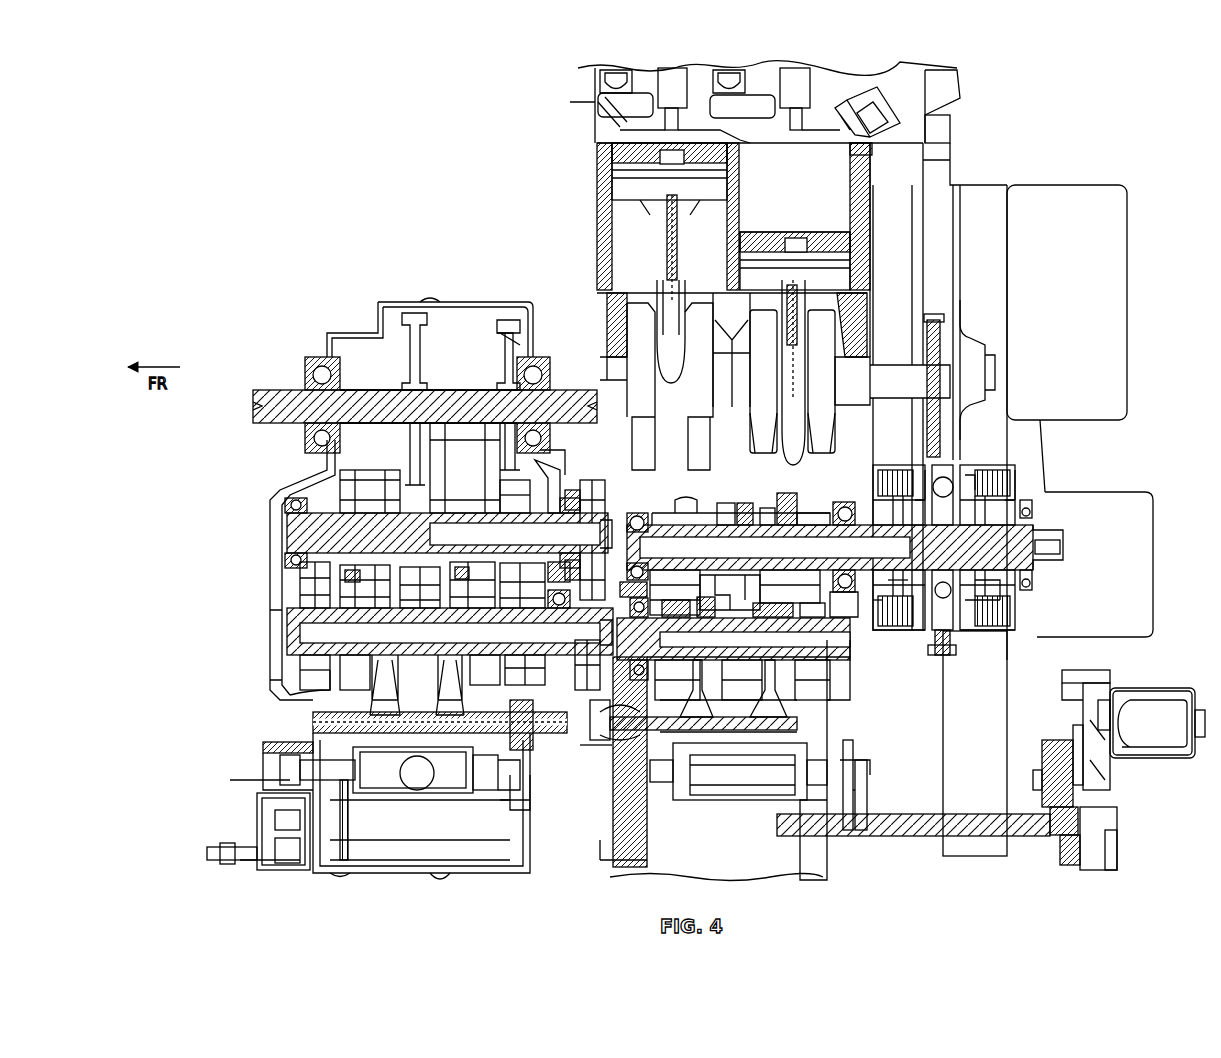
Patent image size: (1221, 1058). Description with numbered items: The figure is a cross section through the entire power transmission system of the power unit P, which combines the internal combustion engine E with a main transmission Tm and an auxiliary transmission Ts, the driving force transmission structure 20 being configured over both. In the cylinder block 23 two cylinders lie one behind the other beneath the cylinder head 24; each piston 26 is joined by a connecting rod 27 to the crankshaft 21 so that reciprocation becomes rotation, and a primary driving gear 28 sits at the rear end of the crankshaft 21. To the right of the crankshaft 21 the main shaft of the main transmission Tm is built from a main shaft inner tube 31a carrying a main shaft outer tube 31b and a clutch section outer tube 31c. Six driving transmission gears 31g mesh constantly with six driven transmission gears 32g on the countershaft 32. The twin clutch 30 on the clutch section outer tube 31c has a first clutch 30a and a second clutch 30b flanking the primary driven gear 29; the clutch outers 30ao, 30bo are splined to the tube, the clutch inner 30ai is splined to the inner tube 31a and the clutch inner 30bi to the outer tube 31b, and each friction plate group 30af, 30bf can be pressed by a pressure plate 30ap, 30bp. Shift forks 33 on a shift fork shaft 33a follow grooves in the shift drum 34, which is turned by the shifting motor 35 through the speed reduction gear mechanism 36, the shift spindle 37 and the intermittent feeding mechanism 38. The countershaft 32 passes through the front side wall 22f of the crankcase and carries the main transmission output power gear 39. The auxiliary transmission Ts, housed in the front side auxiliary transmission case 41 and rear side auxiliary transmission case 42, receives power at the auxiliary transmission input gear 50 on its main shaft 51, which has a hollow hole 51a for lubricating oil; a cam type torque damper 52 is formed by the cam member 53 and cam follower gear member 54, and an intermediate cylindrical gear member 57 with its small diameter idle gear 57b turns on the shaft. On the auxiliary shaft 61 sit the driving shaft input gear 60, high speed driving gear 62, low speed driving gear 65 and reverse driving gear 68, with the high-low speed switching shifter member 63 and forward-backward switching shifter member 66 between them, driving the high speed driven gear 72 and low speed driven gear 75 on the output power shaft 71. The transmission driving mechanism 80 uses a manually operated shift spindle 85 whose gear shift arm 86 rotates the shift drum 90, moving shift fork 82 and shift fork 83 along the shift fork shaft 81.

The driving force transmission structure 20 is at (517, 292).
The crankshaft 21 is at (895, 366).
The front side wall 22f is at (620, 858).
The cylinder block 23 is at (597, 217).
The cylinder head 24 is at (595, 100).
The piston 26 is at (642, 215).
The connecting rod 27 is at (680, 258).
The primary driving gear 28 is at (932, 316).
The primary driven gear 29 is at (940, 645).
The twin clutch 30 is at (975, 440).
The first clutch 30a is at (1000, 440).
The clutch inner 30ai is at (1002, 594).
The friction plate group 30af is at (998, 610).
The clutch outer 30ao is at (965, 632).
The pressure plate 30ap is at (1015, 472).
The second clutch 30b is at (908, 456).
The pressure plate 30bp is at (897, 460).
The clutch inner 30bi is at (885, 600).
The clutch outer 30bo is at (915, 632).
The friction plate group 30bf is at (885, 632).
The main shaft inner tube 31a is at (668, 518).
The main shaft outer tube 31b is at (806, 512).
The clutch section outer tube 31c is at (858, 500).
The driving transmission gears 31g is at (725, 502).
The countershaft 32 is at (598, 692).
The driven transmission gears 32g is at (800, 690).
The shift forks 33 is at (684, 692).
The shift fork shaft 33a is at (618, 738).
The shift drum 34 is at (737, 800).
The shifting motor 35 is at (1140, 688).
The speed reduction gear mechanism 36 is at (1035, 760).
The shift spindle 37 is at (918, 838).
The intermittent feeding mechanism 38 is at (872, 800).
The main transmission output power gear 39 is at (590, 742).
The front side auxiliary transmission case 41 is at (268, 605).
The rear side auxiliary transmission case 42 is at (518, 805).
The auxiliary transmission input gear 50 is at (592, 480).
The main shaft 51 is at (455, 500).
The hollow hole 51a is at (325, 470).
The cam type torque damper 52 is at (545, 472).
The cam member 53 is at (498, 505).
The cam follower gear member 54 is at (512, 462).
The intermediate cylindrical gear member 57 is at (372, 500).
The small diameter idle gear 57b is at (393, 482).
The driving shaft input gear 60 is at (540, 738).
The auxiliary shaft 61 is at (295, 640).
The high speed driving gear 62 is at (508, 688).
The high-low speed switching shifter member 63 is at (470, 602).
The low speed driving gear 65 is at (404, 604).
The forward-backward switching shifter member 66 is at (376, 600).
The reverse driving gear 68 is at (330, 700).
The output power shaft 71 is at (466, 390).
The high speed driven gear 72 is at (497, 328).
The low speed driven gear 75 is at (408, 335).
The transmission driving mechanism 80 is at (250, 812).
The shift fork shaft 81 is at (313, 722).
The shift fork 82 is at (450, 699).
The shift fork 83 is at (388, 699).
The shift spindle 85 is at (425, 845).
The gear shift arm 86 is at (348, 810).
The shift drum 90 is at (427, 792).
The internal combustion engine E is at (972, 172).
The power unit P is at (1008, 110).
The main transmission Tm is at (855, 685).
The auxiliary transmission Ts is at (262, 598).